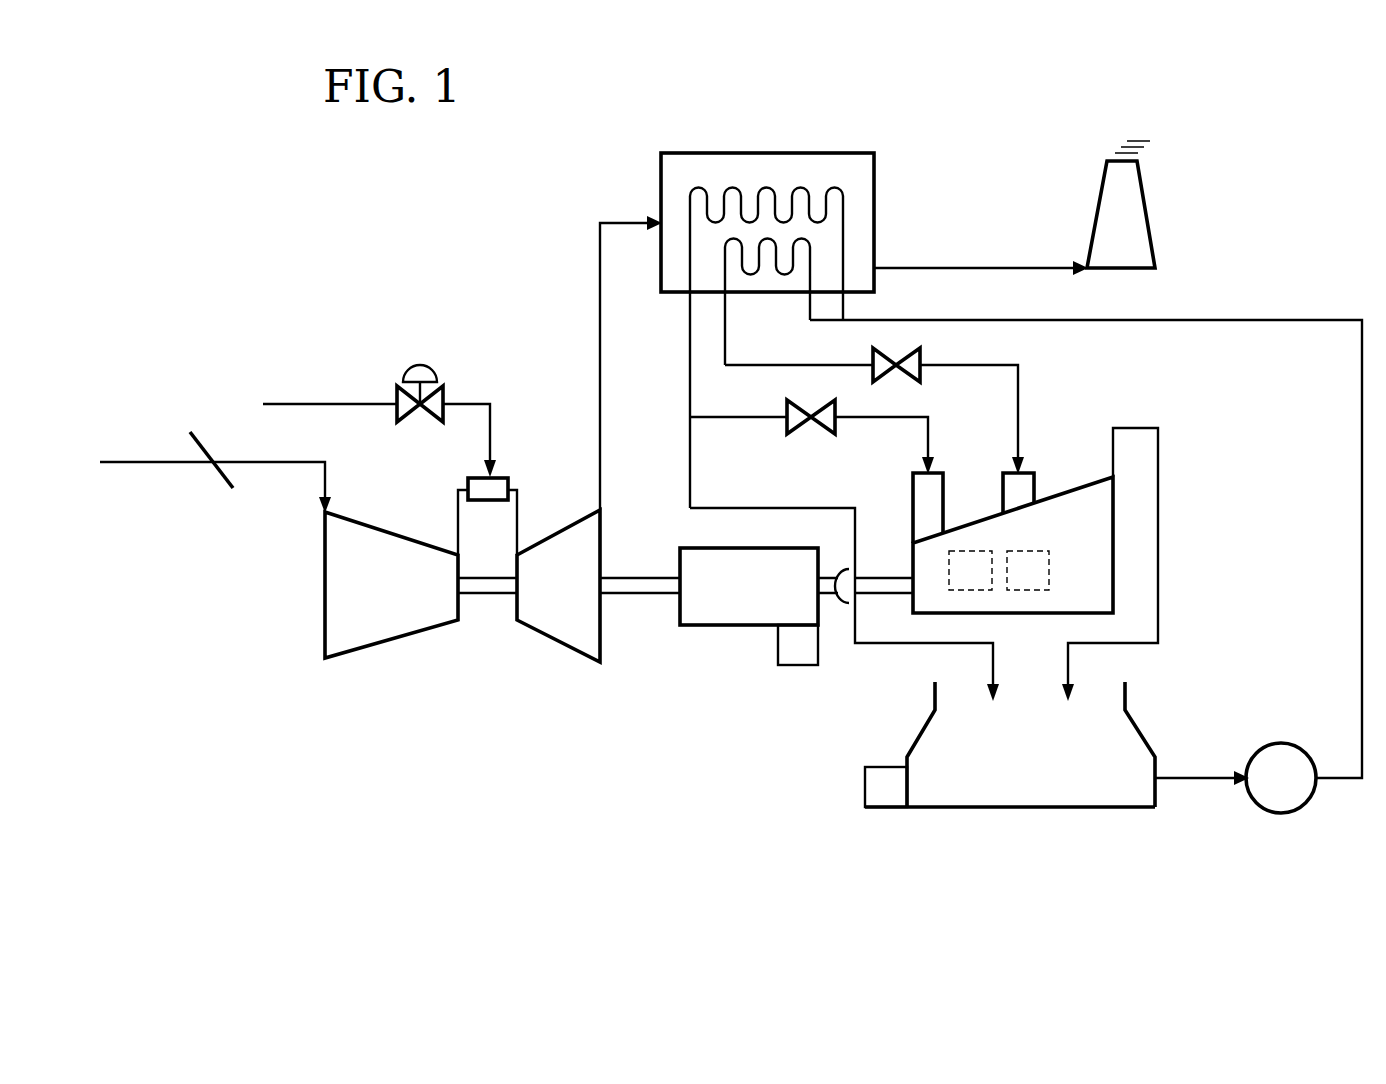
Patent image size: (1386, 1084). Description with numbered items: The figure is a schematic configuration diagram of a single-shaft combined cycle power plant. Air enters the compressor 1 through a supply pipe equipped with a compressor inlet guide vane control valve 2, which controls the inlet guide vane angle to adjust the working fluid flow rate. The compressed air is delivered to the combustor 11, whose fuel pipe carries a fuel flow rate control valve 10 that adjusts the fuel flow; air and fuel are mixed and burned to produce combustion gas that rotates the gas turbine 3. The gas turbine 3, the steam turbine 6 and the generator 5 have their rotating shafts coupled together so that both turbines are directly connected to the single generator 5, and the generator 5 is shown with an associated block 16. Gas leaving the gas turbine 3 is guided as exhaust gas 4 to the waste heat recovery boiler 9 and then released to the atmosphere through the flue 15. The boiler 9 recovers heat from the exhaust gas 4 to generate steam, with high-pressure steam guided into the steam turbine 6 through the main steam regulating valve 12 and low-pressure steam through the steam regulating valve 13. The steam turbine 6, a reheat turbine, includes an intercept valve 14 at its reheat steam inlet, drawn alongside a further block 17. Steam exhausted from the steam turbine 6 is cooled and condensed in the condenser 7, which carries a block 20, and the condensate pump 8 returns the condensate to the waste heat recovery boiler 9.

The compressor 1 is at (392, 643).
The compressor inlet guide vane control valve 2 is at (218, 480).
The gas turbine 3 is at (553, 640).
The exhaust gas 4 is at (600, 272).
The generator 5 is at (705, 628).
The steam turbine 6 is at (1090, 478).
The condenser 7 is at (1018, 810).
The condensate pump 8 is at (1285, 745).
The waste heat recovery boiler 9 is at (876, 200).
The fuel flow rate control valve 10 is at (447, 348).
The combustor 11 is at (500, 477).
The main steam regulating valve 12 is at (822, 434).
The steam regulating valve 13 is at (922, 355).
The intercept valve 14 is at (970, 570).
The flue 15 is at (1147, 213).
The output detector 16 is at (798, 645).
The sensor 17 is at (1028, 570).
The controller 20 is at (886, 787).